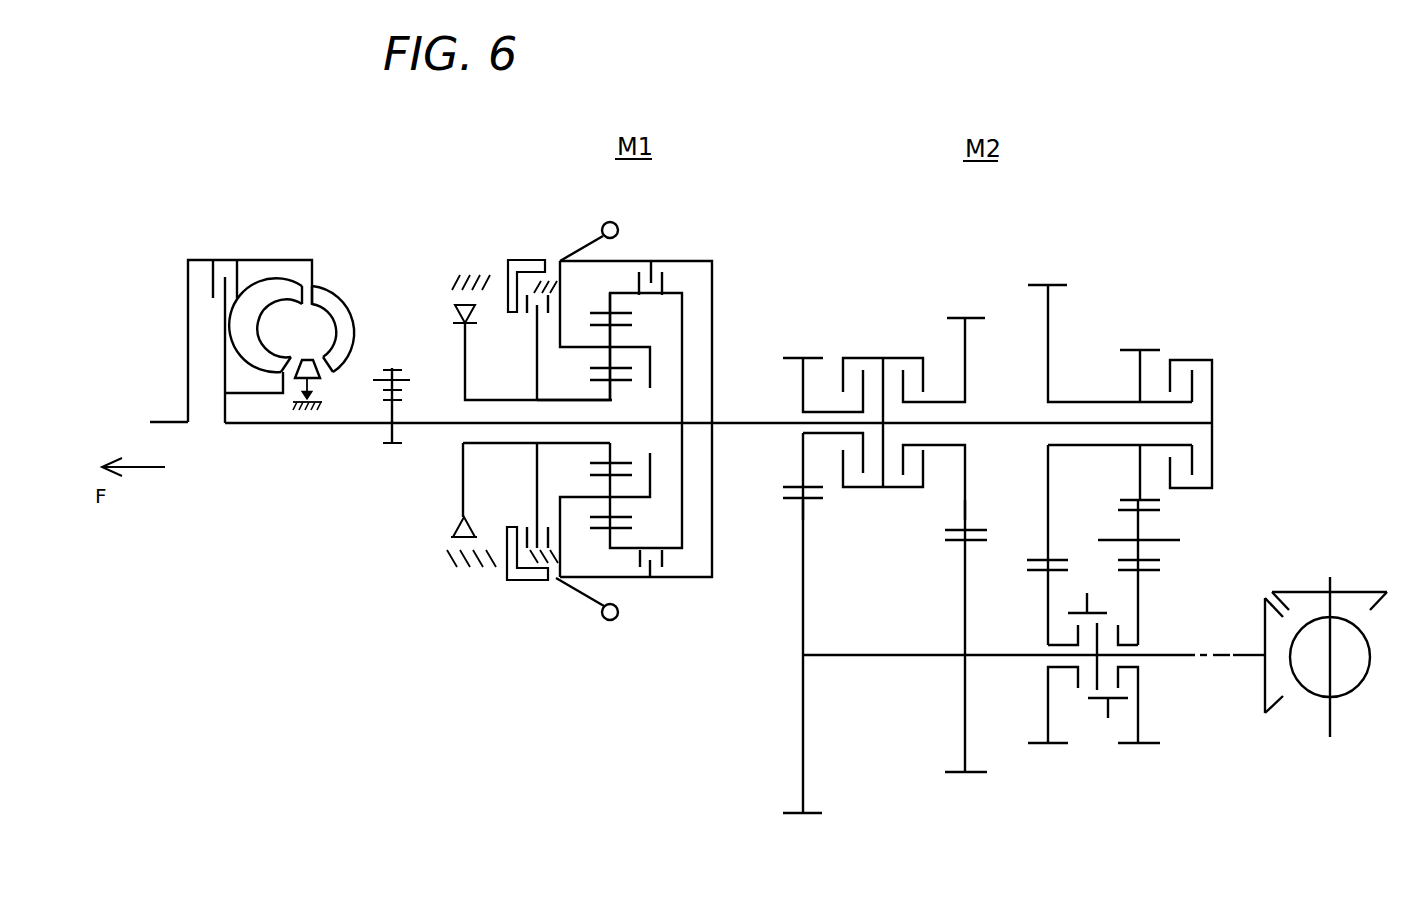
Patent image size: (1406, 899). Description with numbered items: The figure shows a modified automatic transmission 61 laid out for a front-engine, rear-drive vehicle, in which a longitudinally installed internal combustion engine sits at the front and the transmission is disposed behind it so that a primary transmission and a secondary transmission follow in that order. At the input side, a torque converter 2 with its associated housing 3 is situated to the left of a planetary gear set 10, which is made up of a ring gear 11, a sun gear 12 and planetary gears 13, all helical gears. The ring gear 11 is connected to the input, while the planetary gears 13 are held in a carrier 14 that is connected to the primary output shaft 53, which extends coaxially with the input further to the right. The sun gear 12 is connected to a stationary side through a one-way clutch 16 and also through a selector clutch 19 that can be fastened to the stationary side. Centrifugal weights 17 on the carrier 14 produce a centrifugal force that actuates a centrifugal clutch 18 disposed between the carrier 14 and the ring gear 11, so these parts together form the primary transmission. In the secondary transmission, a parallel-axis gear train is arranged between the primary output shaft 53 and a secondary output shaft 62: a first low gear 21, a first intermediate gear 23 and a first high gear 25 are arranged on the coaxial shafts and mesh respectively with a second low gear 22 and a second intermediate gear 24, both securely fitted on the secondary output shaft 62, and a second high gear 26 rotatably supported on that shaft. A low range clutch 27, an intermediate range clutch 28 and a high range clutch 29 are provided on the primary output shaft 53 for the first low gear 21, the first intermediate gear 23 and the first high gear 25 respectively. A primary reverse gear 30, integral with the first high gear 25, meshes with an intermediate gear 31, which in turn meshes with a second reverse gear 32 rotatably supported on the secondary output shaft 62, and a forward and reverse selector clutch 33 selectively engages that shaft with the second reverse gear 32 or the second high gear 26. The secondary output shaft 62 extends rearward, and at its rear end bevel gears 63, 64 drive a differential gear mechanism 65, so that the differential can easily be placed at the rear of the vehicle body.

The torque converter 2 is at (341, 280).
The input clutch / damper 3 is at (244, 281).
The planetary gear set 10 is at (723, 337).
The ring gear 11 is at (612, 306).
The sun gear 12 is at (608, 381).
The planetary gears 13 is at (612, 337).
The carrier 14 is at (580, 263).
The one-way clutch 16 is at (447, 316).
The centrifugal weights 17 is at (619, 229).
The centrifugal clutch 18 is at (674, 274).
The selector clutch 19 is at (525, 323).
The first low gear 21 is at (803, 376).
The second low gear 22 is at (803, 781).
The first intermediate gear 23 is at (965, 348).
The second intermediate gear 24 is at (966, 757).
The first high gear 25 is at (1048, 313).
The second high gear 26 is at (1048, 716).
The low range clutch 27 is at (856, 347).
The intermediate range clutch 28 is at (908, 346).
The high range clutch 29 is at (1207, 356).
The primary reverse gear 30 is at (1140, 373).
The intermediate gear 31 is at (1138, 521).
The second reverse gear 32 is at (1140, 727).
The forward and reverse selector clutch 33 is at (1097, 719).
The primary output shaft 53 is at (1008, 422).
The automatic transmission 61 is at (748, 196).
The secondary output shaft 62 is at (923, 653).
The bevel gear 63 is at (1265, 700).
The bevel gear 64 is at (1353, 590).
The differential gear mechanism 65 is at (1359, 699).